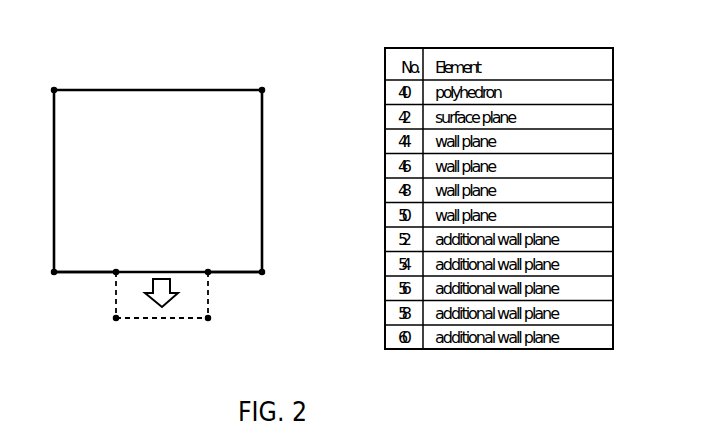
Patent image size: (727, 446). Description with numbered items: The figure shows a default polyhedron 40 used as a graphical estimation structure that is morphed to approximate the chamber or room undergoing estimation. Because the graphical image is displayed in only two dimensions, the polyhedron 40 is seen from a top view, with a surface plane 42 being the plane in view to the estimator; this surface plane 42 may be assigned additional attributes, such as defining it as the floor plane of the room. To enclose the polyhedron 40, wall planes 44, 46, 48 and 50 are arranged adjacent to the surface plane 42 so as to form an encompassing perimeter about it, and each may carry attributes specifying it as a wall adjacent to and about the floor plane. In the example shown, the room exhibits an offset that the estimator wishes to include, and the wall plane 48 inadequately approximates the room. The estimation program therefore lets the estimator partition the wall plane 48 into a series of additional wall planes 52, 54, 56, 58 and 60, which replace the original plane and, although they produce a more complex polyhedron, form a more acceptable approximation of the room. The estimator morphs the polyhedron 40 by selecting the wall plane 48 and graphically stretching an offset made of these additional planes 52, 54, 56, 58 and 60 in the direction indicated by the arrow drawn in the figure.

The polyhedron 40 is at (159, 169).
The surface plane 42 is at (170, 172).
The wall plane 44 is at (90, 88).
The wall plane 46 is at (54, 172).
The wall plane 48 is at (162, 264).
The wall plane 50 is at (262, 180).
The additional wall plane 52 is at (68, 275).
The additional wall plane 54 is at (113, 292).
The additional wall plane 56 is at (168, 320).
The additional wall plane 58 is at (211, 292).
The additional wall plane 60 is at (244, 274).